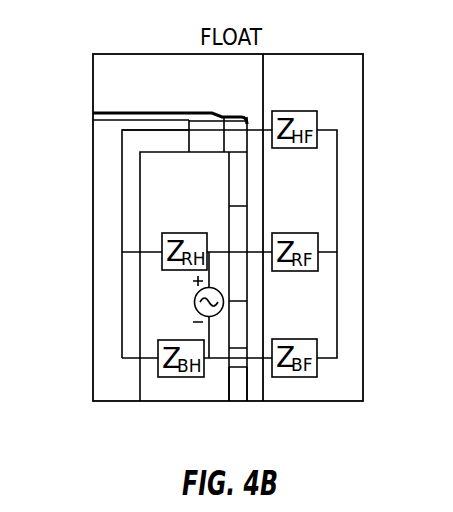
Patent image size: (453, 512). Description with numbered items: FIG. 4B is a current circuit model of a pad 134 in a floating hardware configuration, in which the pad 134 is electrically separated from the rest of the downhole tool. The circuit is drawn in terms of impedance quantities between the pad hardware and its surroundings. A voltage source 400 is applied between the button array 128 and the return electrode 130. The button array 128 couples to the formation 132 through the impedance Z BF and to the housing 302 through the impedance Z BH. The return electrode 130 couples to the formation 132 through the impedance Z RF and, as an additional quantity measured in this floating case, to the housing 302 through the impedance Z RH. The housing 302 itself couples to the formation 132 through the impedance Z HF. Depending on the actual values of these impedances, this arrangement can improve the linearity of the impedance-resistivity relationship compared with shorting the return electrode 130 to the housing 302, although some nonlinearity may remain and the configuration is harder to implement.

The housing 302 is at (103, 209).
The pad 134 is at (228, 106).
The return electrode 130 is at (251, 217).
The formation 132 is at (350, 270).
The button array 128 is at (238, 368).
The voltage source 400 is at (195, 300).